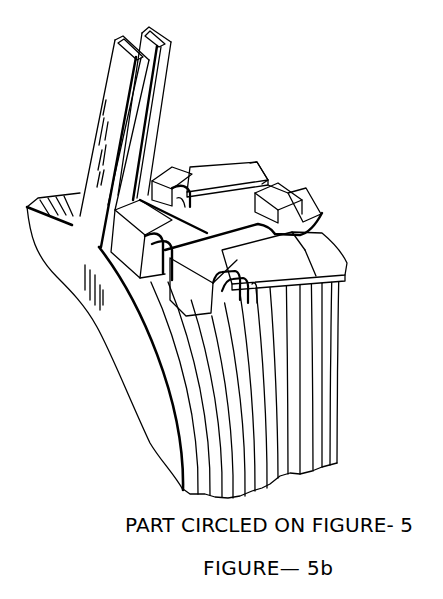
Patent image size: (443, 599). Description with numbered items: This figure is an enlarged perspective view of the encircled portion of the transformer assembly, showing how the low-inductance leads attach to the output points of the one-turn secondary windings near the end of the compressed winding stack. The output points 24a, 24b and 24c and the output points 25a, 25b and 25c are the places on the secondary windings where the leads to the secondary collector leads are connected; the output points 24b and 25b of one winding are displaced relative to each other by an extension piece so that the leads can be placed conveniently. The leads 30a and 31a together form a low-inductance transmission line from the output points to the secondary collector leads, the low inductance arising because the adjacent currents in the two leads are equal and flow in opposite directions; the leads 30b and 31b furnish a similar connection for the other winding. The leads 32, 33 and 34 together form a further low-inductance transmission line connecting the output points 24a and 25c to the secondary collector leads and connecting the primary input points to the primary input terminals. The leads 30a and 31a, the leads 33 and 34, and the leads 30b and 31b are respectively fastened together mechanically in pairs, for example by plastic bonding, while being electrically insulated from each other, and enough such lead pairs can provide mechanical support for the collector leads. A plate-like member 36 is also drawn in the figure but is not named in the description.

The lead 32 is at (183, 352).
The lead 33 is at (112, 195).
The output point 24b is at (148, 172).
The output point 25c is at (127, 241).
The output point 24c is at (193, 287).
The output point 25a is at (177, 188).
The lead 30a is at (208, 172).
The lead 31a is at (248, 169).
The plate 36 is at (225, 217).
The output point 24a is at (272, 212).
The lead 34 is at (303, 208).
The lead 30b is at (287, 258).
The lead 31b is at (302, 280).
The output point 25b is at (235, 303).